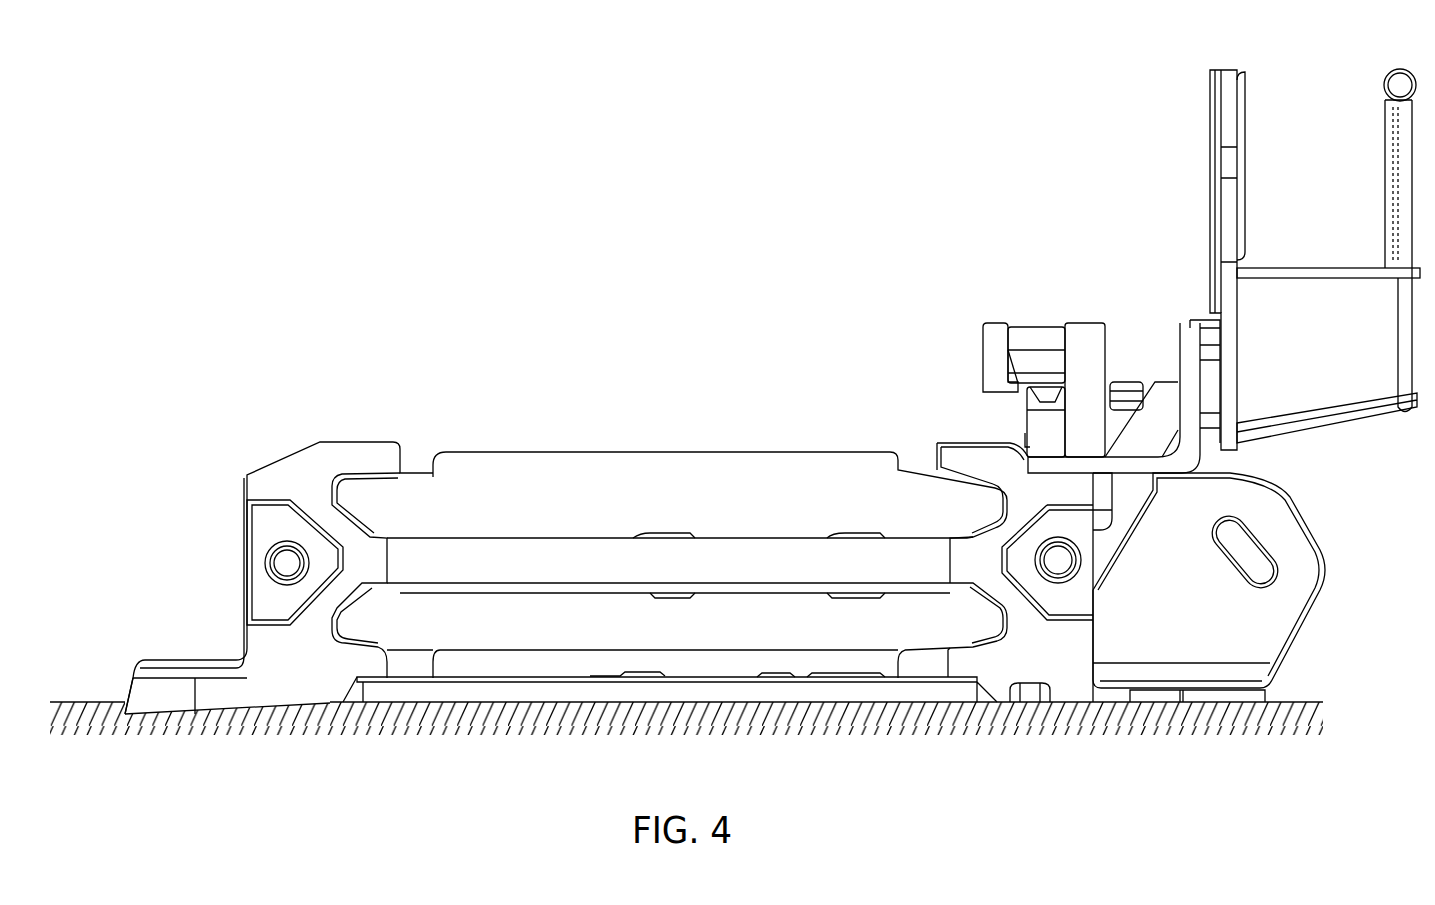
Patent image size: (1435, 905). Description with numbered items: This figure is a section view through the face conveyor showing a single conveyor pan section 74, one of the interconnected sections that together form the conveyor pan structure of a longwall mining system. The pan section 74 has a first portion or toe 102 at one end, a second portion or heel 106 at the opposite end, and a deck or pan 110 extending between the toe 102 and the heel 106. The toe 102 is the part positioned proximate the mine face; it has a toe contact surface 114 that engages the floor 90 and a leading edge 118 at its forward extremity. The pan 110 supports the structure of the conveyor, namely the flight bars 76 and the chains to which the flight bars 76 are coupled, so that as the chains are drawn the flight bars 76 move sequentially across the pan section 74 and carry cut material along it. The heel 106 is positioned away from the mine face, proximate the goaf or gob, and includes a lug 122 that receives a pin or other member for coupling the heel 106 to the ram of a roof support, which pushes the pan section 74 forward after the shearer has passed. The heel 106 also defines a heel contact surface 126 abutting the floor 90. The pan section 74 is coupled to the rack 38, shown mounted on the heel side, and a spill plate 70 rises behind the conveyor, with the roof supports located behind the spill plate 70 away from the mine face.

The pan section 74 is at (740, 546).
The toe 102 is at (195, 530).
The heel 106 is at (1238, 618).
The pan 110 is at (615, 520).
The flight bars 76 is at (825, 625).
The rack 38 is at (995, 343).
The spill plate 70 is at (1227, 218).
The floor 90 is at (918, 702).
The toe contact surface 114 is at (283, 710).
The leading edge 118 is at (123, 722).
The lug 122 is at (1272, 570).
The heel contact surface 126 is at (1162, 703).